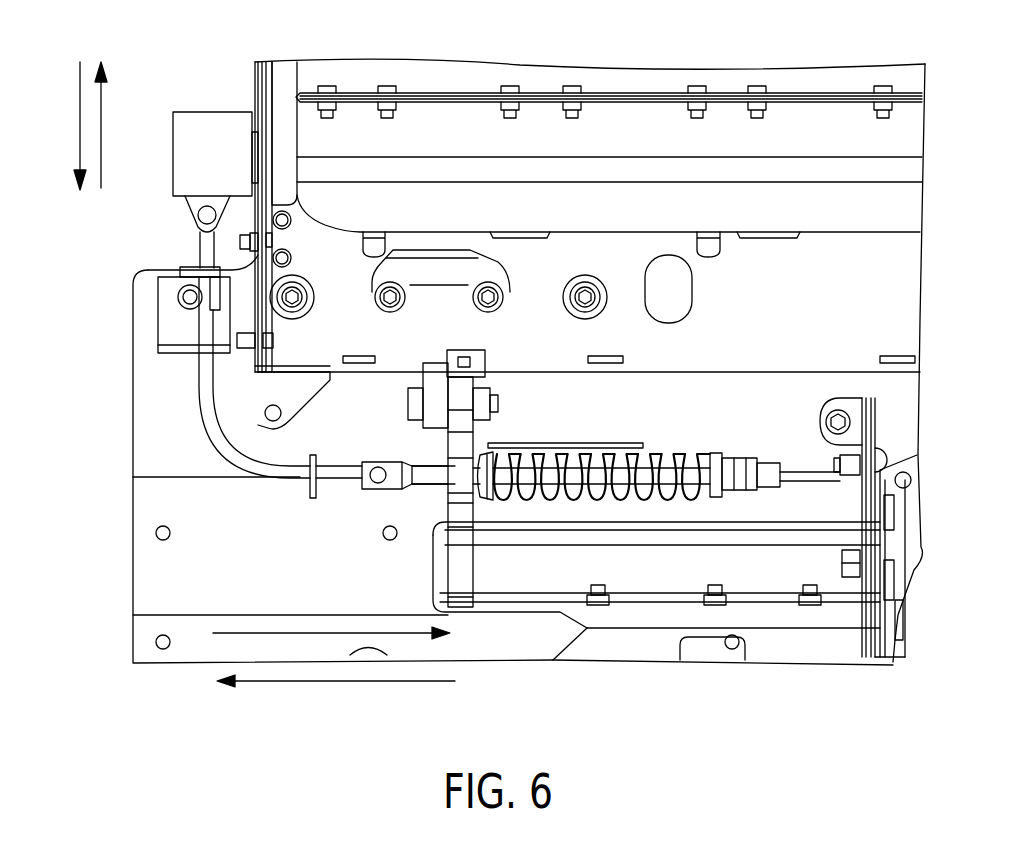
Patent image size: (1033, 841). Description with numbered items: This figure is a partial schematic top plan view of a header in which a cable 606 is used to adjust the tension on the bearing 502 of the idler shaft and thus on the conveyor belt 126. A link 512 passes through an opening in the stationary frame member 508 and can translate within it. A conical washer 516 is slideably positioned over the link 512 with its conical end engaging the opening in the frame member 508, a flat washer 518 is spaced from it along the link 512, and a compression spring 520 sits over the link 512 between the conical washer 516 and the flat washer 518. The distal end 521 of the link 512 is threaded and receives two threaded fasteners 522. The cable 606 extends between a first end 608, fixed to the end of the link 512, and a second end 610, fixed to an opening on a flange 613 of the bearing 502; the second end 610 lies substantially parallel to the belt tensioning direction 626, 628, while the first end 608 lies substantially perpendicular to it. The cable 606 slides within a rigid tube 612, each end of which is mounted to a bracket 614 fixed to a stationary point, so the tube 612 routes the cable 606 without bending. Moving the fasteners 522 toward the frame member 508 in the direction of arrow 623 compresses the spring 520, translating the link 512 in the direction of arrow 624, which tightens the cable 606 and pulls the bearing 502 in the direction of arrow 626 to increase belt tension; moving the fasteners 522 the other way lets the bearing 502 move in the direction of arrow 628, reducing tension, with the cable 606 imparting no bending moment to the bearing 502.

The conveyor belt 126 is at (360, 72).
The bearing 502 is at (186, 150).
The flange 613 is at (192, 212).
The second end 610 is at (197, 251).
The bracket 614 is at (187, 283).
The rigid tube 612 is at (207, 415).
The cable 606 is at (263, 465).
The first end 608 is at (352, 473).
The link 512 is at (430, 473).
The frame member 508 is at (457, 450).
The conical washer 516 is at (477, 463).
The compression spring 520 is at (675, 447).
The flat washer 518 is at (718, 455).
The threaded fasteners 522 is at (748, 463).
The distal end 521 is at (777, 462).
The arrow 626 is at (78, 103).
The arrow 628 is at (103, 103).
The arrow 623 is at (250, 683).
The arrow 624 is at (415, 635).